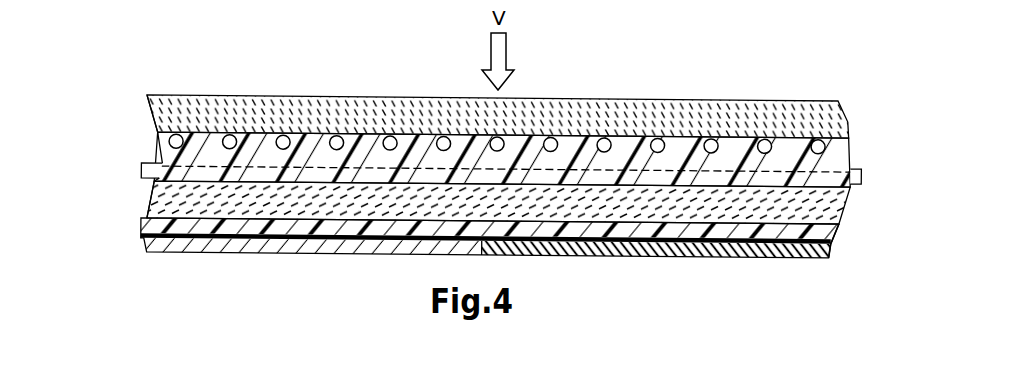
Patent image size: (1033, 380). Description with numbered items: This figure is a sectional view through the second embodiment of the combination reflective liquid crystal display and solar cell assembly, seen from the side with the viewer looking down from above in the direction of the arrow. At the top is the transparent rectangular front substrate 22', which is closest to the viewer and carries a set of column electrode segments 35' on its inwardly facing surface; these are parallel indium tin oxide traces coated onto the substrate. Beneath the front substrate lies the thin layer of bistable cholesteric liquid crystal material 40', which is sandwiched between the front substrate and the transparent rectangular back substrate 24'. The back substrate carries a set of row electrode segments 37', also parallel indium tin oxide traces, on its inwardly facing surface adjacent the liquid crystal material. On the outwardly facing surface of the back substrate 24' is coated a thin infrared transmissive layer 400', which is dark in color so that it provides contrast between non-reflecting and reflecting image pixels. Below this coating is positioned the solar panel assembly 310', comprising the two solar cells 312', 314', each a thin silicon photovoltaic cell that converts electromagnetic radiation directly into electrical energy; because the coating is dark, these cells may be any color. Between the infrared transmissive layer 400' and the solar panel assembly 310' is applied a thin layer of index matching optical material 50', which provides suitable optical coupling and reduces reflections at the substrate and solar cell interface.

The front substrate 22' is at (498, 87).
The column electrode segments 35' is at (476, 96).
The cholesteric liquid crystal material 40' is at (460, 158).
The row electrode segments 37' is at (464, 185).
The back substrate 24' is at (465, 217).
The solar panel assembly 310' is at (490, 267).
The solar cell 312' is at (490, 268).
The infrared transmissive layer 400' is at (486, 266).
The solar cell 314' is at (487, 270).
The index matching optical material 50' is at (840, 264).